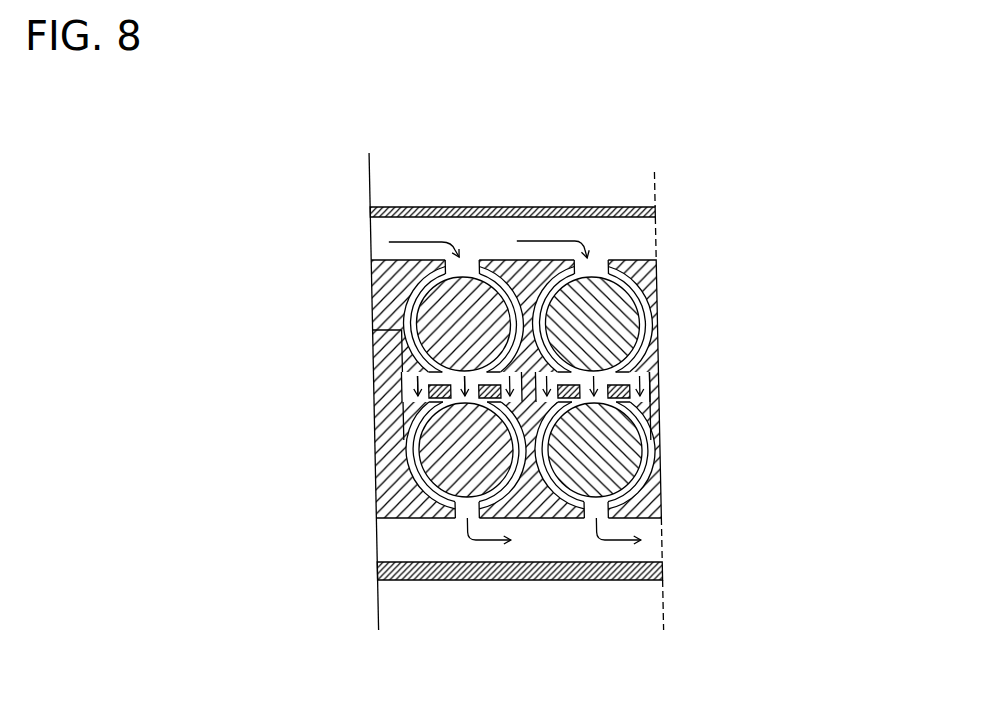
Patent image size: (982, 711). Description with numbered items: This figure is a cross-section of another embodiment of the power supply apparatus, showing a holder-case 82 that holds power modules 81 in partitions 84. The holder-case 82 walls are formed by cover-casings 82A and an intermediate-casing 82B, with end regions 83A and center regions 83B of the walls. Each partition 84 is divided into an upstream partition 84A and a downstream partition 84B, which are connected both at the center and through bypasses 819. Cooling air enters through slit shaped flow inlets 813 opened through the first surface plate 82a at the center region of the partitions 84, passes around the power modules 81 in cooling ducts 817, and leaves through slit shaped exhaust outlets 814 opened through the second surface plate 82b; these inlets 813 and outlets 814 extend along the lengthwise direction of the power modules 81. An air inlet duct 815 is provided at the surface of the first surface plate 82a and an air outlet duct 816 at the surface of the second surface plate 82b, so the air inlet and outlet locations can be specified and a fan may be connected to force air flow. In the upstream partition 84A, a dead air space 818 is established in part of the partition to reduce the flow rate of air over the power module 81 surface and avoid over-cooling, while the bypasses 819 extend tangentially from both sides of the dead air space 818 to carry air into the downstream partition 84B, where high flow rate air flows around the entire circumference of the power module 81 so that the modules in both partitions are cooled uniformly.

The power module 81 is at (645, 262).
The holder-case 82 is at (280, 493).
The cover-casing 82A is at (361, 268).
The intermediate-casing 82B is at (361, 452).
The first surface plate 82a is at (492, 255).
The second surface plate 82b is at (520, 526).
The end region 83A is at (530, 290).
The center region 83B is at (583, 335).
The partition 84 is at (838, 426).
The upstream partition 84A is at (655, 330).
The downstream partition 84B is at (660, 440).
The slit shaped flow inlet 813 is at (462, 243).
The slit shaped exhaust outlet 814 is at (458, 528).
The air inlet duct 815 is at (368, 226).
The air outlet duct 816 is at (388, 544).
The cooling duct 817 is at (656, 312).
The dead air space 818 is at (558, 390).
The bypass 819 is at (660, 405).